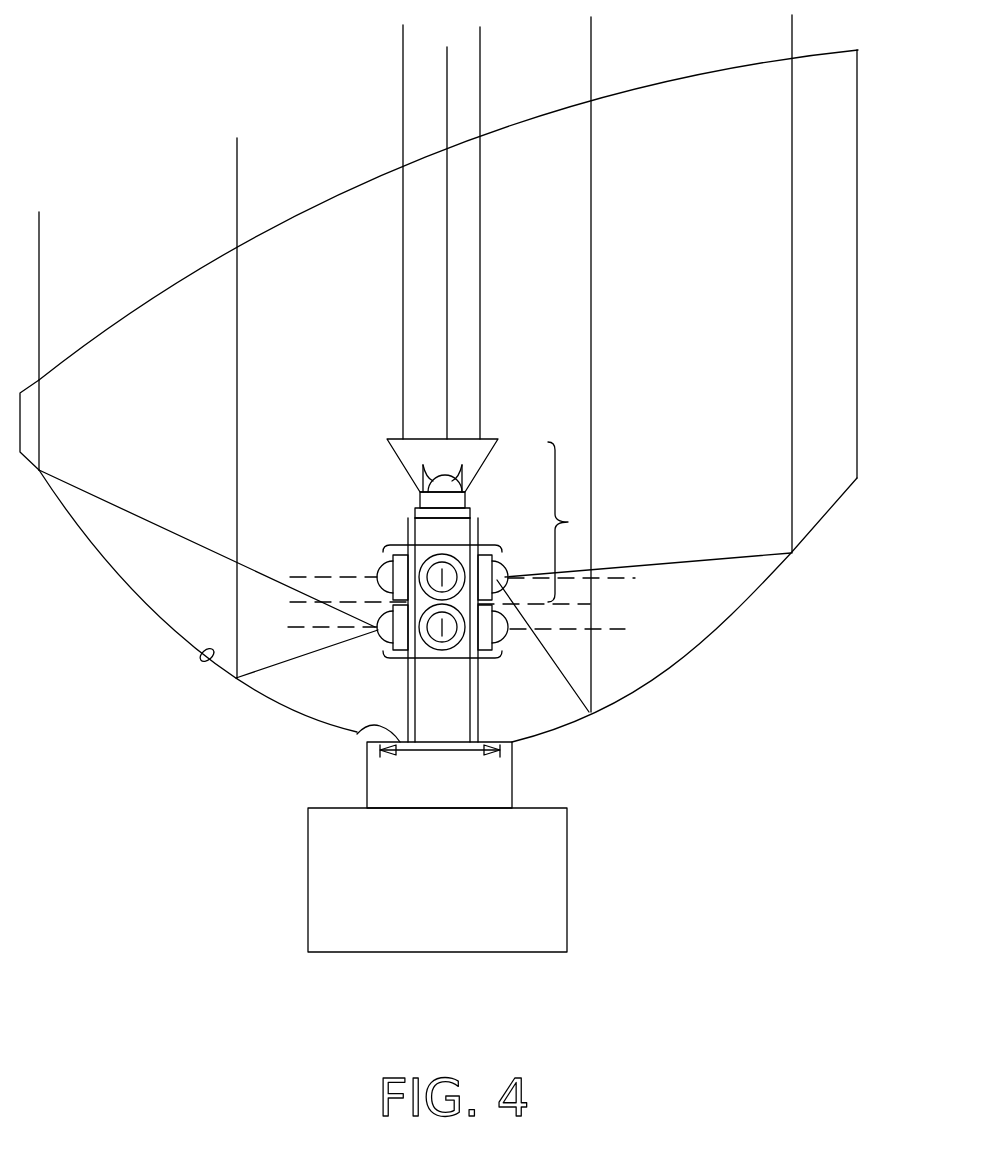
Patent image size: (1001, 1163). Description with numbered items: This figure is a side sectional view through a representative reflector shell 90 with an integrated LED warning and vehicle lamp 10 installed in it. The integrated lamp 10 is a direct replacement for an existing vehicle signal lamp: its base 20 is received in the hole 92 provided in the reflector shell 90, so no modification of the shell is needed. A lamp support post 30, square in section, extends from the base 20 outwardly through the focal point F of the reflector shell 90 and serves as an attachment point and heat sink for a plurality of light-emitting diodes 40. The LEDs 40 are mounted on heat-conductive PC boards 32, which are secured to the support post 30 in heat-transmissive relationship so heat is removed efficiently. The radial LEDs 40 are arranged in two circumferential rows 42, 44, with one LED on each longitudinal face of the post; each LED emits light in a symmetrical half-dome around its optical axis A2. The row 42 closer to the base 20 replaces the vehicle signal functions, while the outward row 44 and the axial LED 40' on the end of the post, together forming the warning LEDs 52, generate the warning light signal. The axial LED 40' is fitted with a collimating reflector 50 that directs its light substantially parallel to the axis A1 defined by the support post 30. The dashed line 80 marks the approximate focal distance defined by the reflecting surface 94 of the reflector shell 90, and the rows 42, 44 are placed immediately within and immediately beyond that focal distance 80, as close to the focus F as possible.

The integrated LED warning and vehicle lamp 10 is at (585, 778).
The base 20 is at (540, 887).
The lamp support post 30 is at (433, 710).
The heat-conductive PC boards 32 is at (472, 710).
The light-emitting diodes 40 is at (414, 586).
The axial LED 40' is at (475, 495).
The row of LEDs closer to the base 42 is at (440, 662).
The outward row of LEDs 44 is at (443, 541).
The collimating reflector 50 is at (412, 453).
The warning light LEDs 52 is at (568, 522).
The focal distance 80 is at (575, 605).
The reflector shell 90 is at (162, 622).
The hole 92 is at (360, 733).
The reflecting surface 94 is at (216, 661).
The optical axis of the axial LED A1 is at (447, 85).
The optical axis of the radial LEDs A2 is at (610, 578).
The focal point F is at (388, 582).